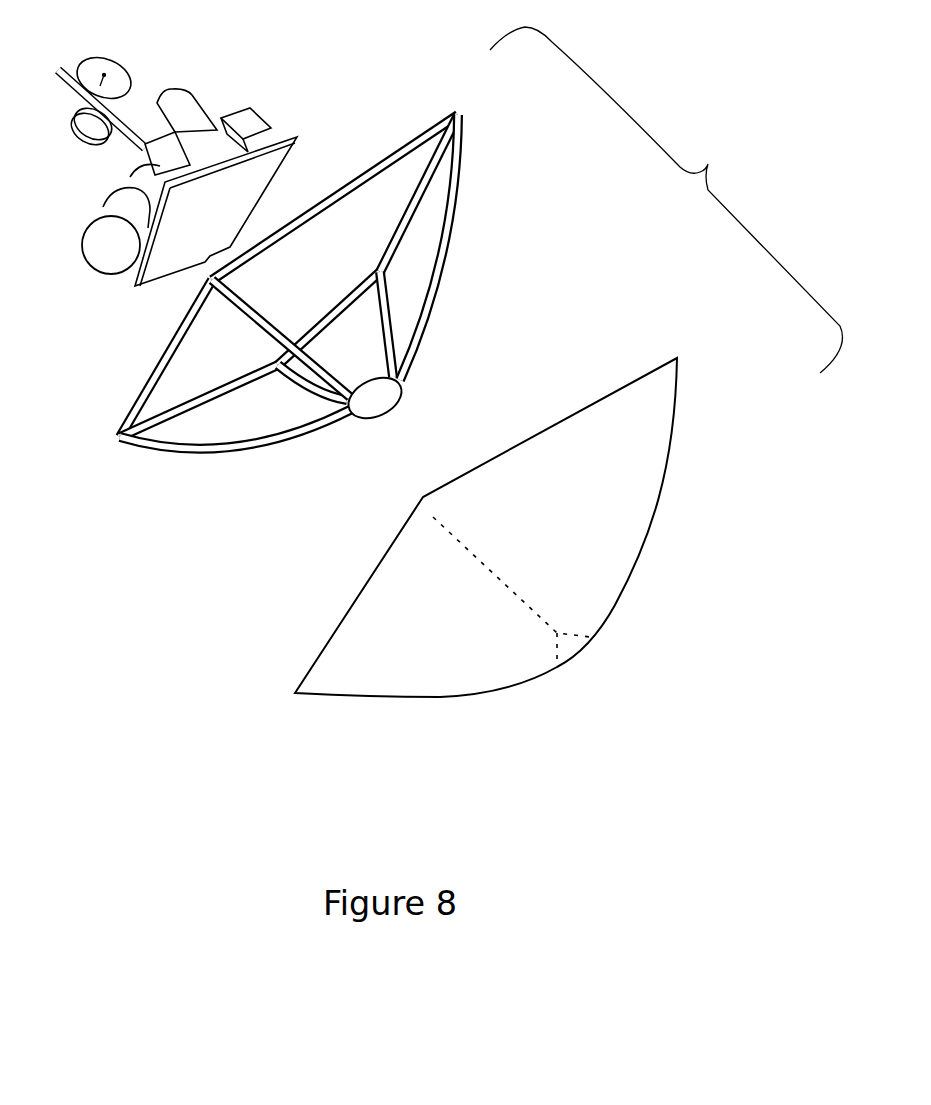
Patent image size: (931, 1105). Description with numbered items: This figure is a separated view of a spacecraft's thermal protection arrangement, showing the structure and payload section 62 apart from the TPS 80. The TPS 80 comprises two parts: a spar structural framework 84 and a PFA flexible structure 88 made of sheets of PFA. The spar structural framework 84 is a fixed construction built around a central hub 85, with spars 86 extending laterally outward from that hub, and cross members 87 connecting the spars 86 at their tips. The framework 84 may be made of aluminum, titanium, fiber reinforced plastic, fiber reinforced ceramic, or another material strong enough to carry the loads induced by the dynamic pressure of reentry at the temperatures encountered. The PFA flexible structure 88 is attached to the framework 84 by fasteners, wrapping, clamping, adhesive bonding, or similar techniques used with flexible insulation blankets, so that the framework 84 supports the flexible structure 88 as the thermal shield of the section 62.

The structure and payload section 62 is at (183, 103).
The TPS 80 is at (666, 200).
The spar structural framework 84 is at (210, 498).
The central hub 85 is at (380, 395).
The spars 86 is at (443, 250).
The cross members 87 is at (360, 172).
The PFA flexible structure 88 is at (640, 430).